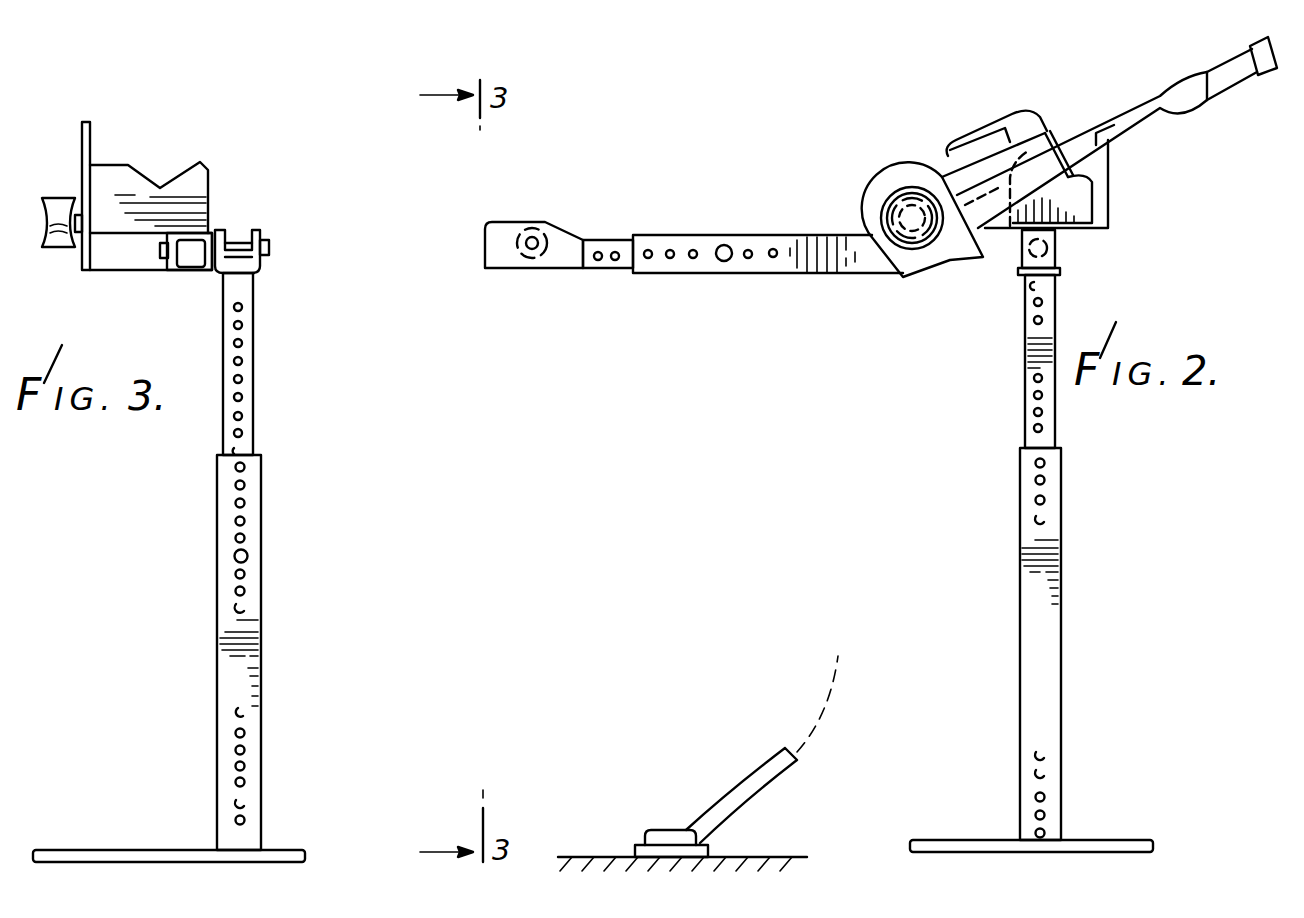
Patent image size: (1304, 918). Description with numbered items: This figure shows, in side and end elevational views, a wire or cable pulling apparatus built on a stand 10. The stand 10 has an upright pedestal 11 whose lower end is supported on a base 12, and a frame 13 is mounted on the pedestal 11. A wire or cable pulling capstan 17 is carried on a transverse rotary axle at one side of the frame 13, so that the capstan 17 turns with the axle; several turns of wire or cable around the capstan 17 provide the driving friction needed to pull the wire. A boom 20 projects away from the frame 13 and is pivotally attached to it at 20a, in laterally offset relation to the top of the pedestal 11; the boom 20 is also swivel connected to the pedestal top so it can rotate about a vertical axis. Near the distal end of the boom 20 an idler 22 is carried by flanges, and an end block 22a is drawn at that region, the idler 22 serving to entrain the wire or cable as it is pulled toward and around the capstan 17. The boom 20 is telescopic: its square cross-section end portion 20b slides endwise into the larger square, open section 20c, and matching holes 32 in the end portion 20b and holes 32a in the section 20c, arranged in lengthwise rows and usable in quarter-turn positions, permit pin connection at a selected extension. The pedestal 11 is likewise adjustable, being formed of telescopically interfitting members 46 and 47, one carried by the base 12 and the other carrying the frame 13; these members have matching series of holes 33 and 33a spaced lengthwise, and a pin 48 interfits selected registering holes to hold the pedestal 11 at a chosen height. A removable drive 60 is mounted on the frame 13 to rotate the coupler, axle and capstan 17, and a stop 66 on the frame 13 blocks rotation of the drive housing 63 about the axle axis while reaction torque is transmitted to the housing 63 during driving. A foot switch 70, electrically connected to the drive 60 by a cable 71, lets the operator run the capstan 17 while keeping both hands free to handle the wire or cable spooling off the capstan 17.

In FIG. 2, the stand 10 is at (871, 454).
In FIG. 3, the upright pedestal 11 is at (211, 507).
In FIG. 2, the upright pedestal 11 is at (1048, 535).
In FIG. 3, the base 12 is at (125, 850).
In FIG. 2, the base 12 is at (1130, 838).
In FIG. 3, the frame 13 is at (128, 165).
In FIG. 2, the frame 13 is at (1108, 200).
In FIG. 3, the wire or cable pulling capstan 17 is at (58, 196).
In FIG. 2, the wire or cable pulling capstan 17 is at (916, 244).
In FIG. 2, the boom 20 is at (684, 254).
In FIG. 3, the pivotal attachment of boom to frame 20a is at (269, 247).
In FIG. 2, the pivotal attachment of boom to frame 20a is at (1050, 248).
In FIG. 2, the boom end portion 20b is at (611, 238).
In FIG. 2, the open portion or section of the boom 20c is at (768, 296).
In FIG. 2, the idler 22 is at (520, 236).
In FIG. 2, the arm end block 22a is at (497, 264).
In FIG. 2, the holes 32 is at (613, 262).
In FIG. 2, the holes 32a is at (747, 262).
In FIG. 3, the holes 33 is at (245, 519).
In FIG. 3, the holes 33a is at (240, 359).
In FIG. 3, the telescopically interfitting member 46 is at (247, 652).
In FIG. 2, the telescopically interfitting member 46 is at (1022, 645).
In FIG. 3, the telescopically interfitting member 47 is at (289, 364).
In FIG. 2, the telescopically interfitting member 47 is at (1022, 412).
In FIG. 3, the pin 48 is at (232, 556).
In FIG. 2, the removable drive 60 is at (1048, 188).
In FIG. 2, the housing 63 is at (1078, 142).
In FIG. 2, the stop 66 is at (1092, 170).
In FIG. 2, the foot switch 70 is at (665, 830).
In FIG. 2, the cable 71 is at (752, 778).